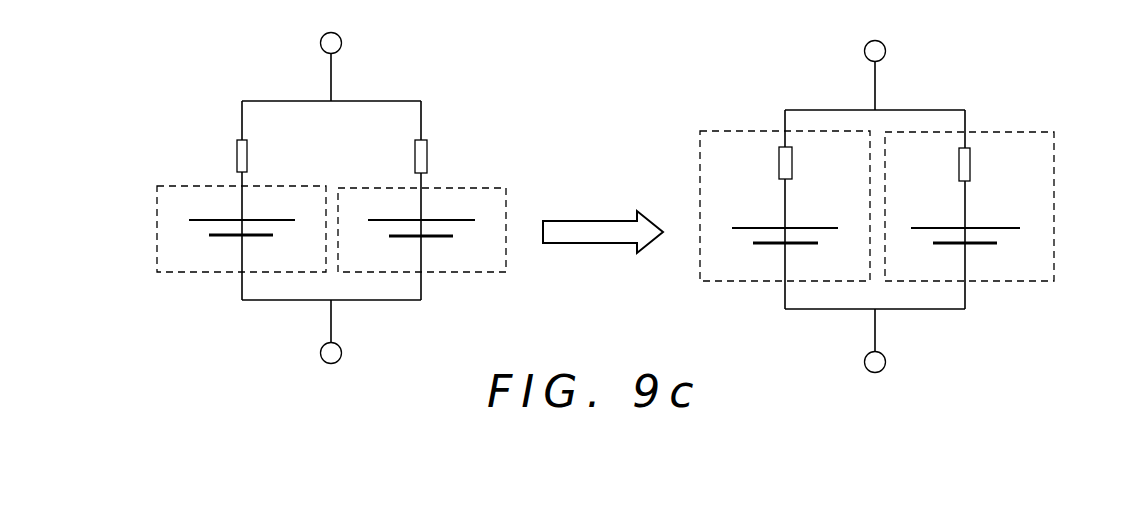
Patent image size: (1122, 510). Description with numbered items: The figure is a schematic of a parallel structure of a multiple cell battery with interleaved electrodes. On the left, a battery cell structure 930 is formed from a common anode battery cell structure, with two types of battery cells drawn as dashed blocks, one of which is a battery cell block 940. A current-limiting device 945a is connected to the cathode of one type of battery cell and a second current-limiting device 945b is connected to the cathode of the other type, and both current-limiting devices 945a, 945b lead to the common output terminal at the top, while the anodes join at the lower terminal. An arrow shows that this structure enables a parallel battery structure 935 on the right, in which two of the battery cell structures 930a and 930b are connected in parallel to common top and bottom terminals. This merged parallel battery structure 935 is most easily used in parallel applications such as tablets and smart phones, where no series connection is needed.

The battery cell structure 930 is at (487, 70).
The parallel battery structure 935 is at (175, 186).
The battery cell block 940 is at (488, 187).
The current-limiting device 945a is at (236, 155).
The current-limiting device 945b is at (430, 157).
The battery cell structure 930a is at (727, 131).
The battery cell structure 930b is at (1028, 132).